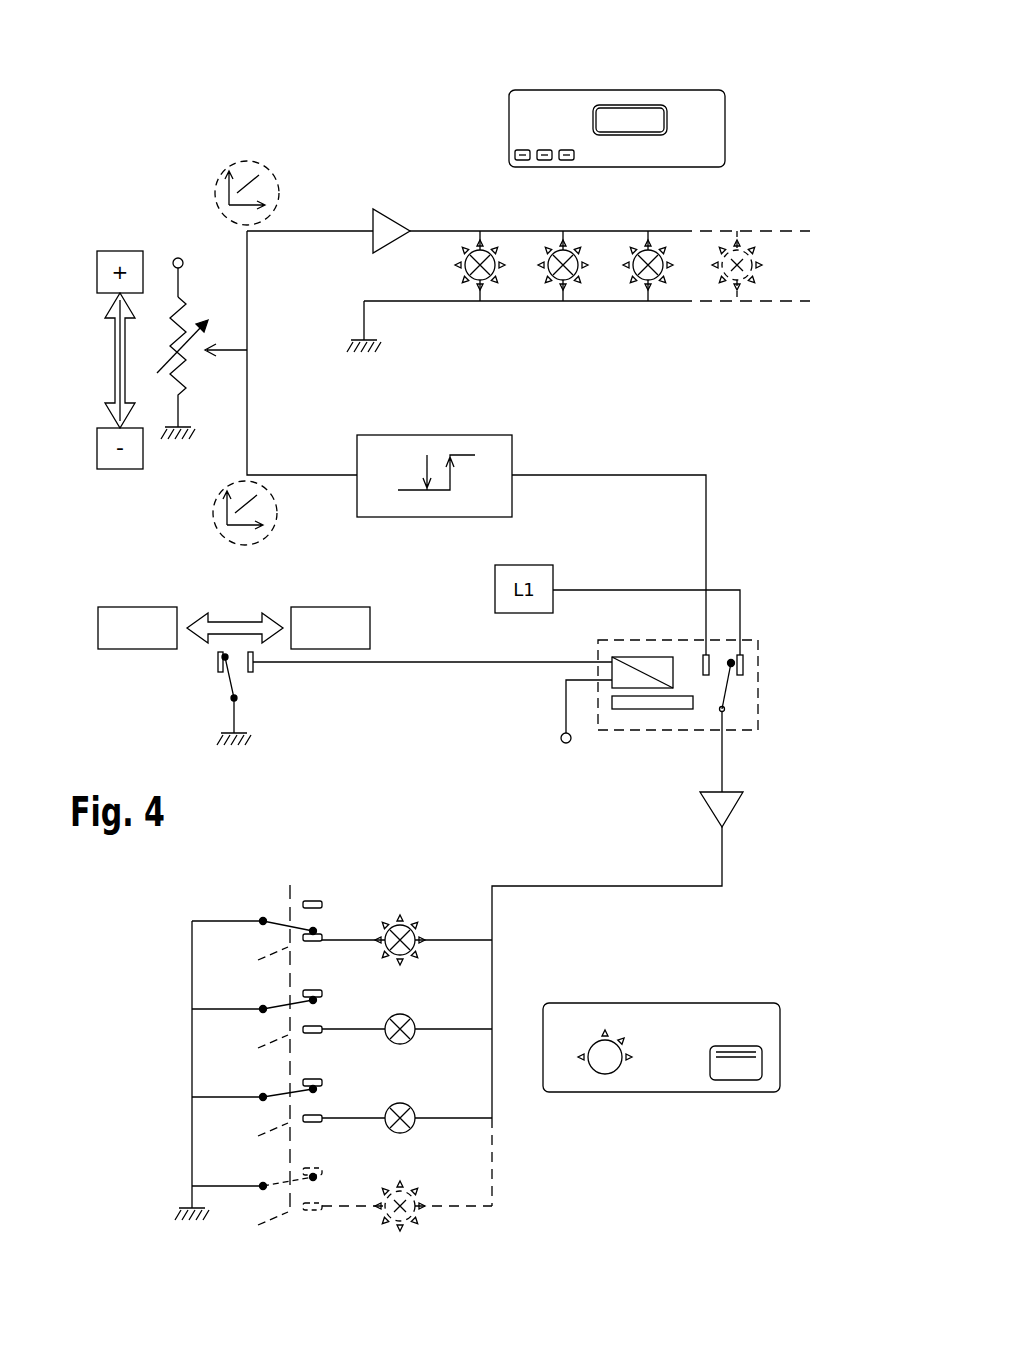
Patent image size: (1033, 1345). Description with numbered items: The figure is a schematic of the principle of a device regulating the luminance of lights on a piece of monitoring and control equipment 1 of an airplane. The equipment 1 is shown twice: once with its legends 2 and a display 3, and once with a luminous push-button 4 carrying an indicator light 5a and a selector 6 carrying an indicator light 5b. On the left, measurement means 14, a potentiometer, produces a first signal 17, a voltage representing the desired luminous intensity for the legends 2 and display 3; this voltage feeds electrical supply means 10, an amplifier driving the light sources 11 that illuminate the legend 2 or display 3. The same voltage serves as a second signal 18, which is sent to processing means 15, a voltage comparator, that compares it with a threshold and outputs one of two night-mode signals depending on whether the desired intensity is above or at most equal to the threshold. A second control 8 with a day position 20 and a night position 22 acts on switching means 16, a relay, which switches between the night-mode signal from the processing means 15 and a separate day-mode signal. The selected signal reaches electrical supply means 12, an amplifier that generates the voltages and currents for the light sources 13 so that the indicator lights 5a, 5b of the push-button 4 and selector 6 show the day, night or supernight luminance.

The piece of monitoring and control equipment 1 is at (563, 70).
The legend 2 is at (515, 154).
The display 3 is at (632, 105).
The luminous push-button 4 is at (767, 1072).
The indicator light 5a is at (720, 1060).
The indicator light 5b is at (583, 1037).
The selector 6 is at (603, 1072).
The second control 8 is at (232, 685).
The electrical supply means 10 is at (388, 222).
The light sources 11 is at (653, 280).
The electrical supply means 12 is at (700, 806).
The light sources 13 is at (353, 1208).
The measurement means 14 is at (190, 385).
The processing means 15 is at (441, 435).
The switching means 16 is at (758, 685).
The first signal 17 is at (247, 160).
The second signal 18 is at (214, 513).
The day position 20 is at (130, 649).
The night position 22 is at (370, 628).